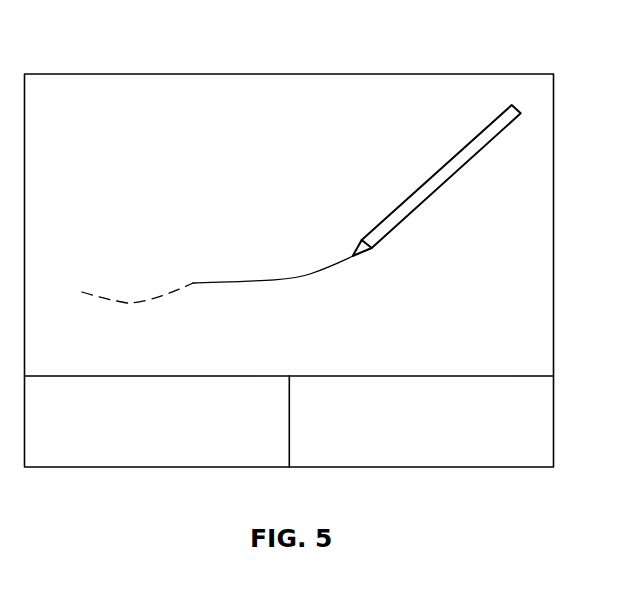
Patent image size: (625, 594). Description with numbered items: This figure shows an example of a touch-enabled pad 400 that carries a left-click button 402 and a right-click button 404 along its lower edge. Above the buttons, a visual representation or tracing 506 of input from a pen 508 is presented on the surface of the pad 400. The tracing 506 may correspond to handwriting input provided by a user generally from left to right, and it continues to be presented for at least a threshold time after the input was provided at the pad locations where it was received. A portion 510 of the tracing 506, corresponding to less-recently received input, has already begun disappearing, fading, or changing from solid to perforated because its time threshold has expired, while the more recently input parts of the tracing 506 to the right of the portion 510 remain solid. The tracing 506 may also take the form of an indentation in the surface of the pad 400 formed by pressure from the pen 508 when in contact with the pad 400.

The touch-enabled pad 400 is at (486, 67).
The left-click button 402 is at (108, 467).
The right-click button 404 is at (492, 467).
The tracing 506 is at (293, 282).
The pen 508 is at (432, 195).
The portion of the tracing 510 is at (207, 278).